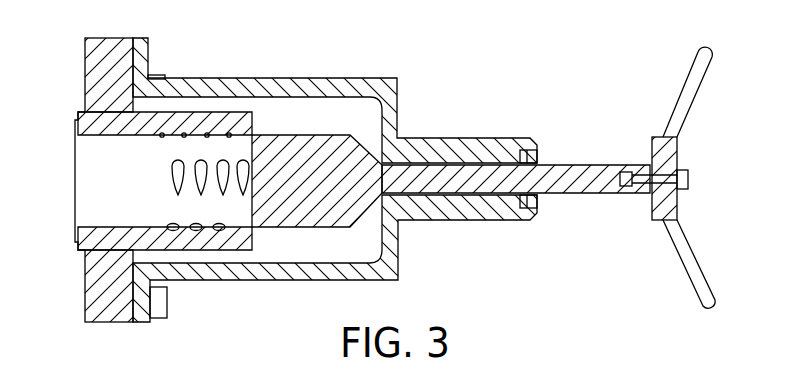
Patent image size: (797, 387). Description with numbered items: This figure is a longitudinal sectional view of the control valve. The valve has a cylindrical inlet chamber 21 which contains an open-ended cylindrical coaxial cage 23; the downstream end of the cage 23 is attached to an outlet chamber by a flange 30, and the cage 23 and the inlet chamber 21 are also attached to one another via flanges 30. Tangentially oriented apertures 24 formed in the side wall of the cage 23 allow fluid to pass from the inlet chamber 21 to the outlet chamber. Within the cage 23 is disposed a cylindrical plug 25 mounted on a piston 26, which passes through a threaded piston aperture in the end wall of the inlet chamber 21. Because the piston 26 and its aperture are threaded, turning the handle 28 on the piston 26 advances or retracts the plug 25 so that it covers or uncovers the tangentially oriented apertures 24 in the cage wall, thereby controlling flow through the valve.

The cylindrical inlet chamber 21 is at (372, 248).
The cage 23 is at (100, 292).
The tangentially oriented apertures 24 is at (172, 172).
The cylindrical plug 25 is at (318, 160).
The piston 26 is at (590, 168).
The handle 28 is at (697, 252).
The flange 30 is at (113, 310).